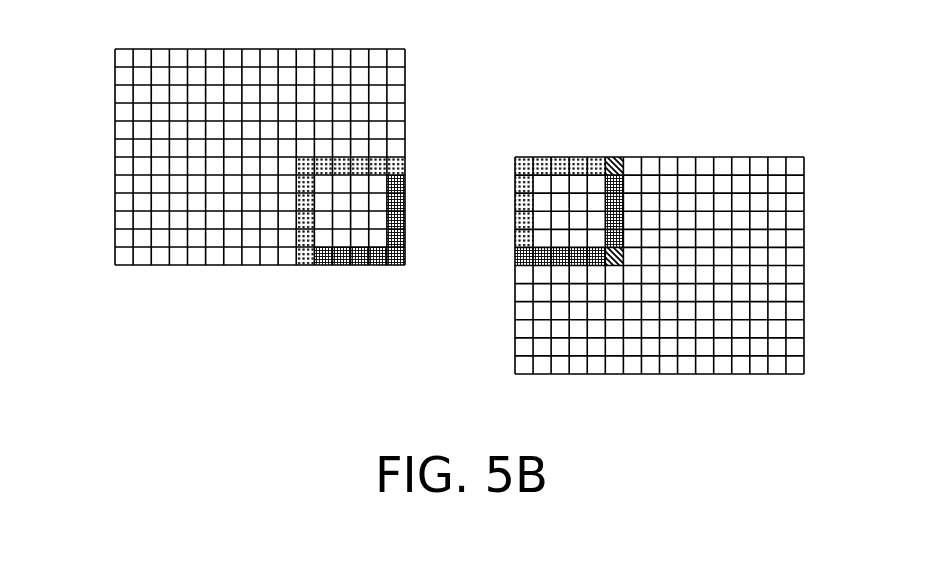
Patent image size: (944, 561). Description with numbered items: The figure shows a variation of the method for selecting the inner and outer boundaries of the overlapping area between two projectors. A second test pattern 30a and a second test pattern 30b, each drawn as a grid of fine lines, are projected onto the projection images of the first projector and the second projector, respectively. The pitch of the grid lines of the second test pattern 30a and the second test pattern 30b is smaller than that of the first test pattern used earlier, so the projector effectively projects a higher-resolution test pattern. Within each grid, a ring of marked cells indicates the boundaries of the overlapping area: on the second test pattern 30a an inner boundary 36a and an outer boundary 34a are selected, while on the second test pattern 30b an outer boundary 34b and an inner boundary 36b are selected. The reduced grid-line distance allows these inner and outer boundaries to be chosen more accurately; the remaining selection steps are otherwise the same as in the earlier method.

The second test pattern 30a is at (115, 98).
The second test pattern 30b is at (805, 208).
The outer boundary 34a is at (360, 258).
The outer boundary 34b is at (569, 163).
The inner boundary 36a is at (358, 165).
The inner boundary 36b is at (561, 258).